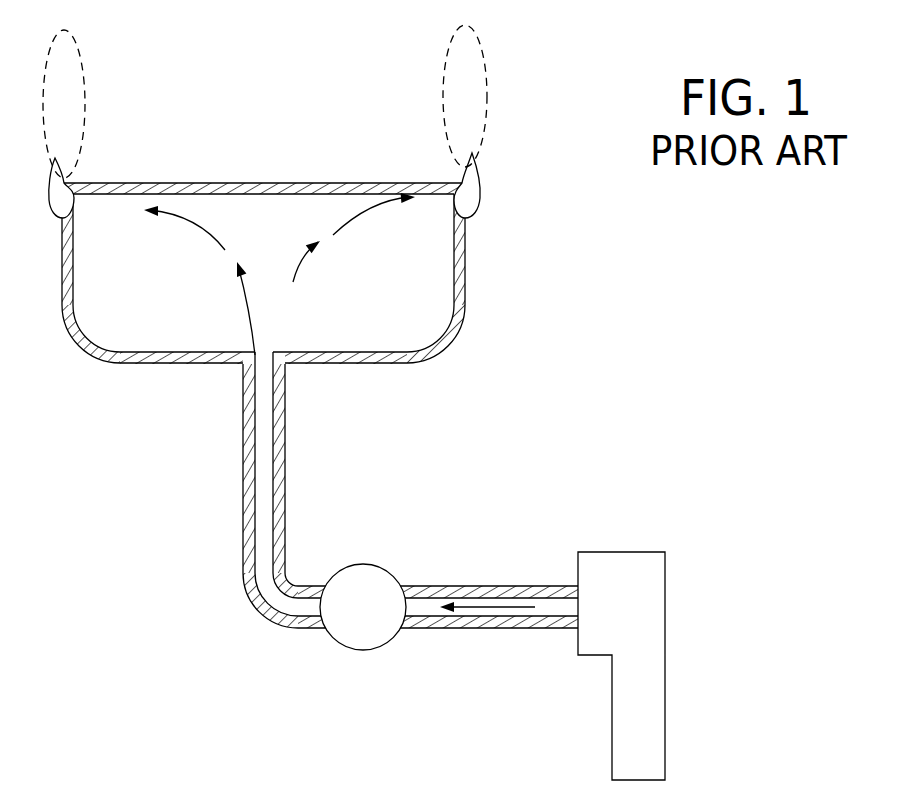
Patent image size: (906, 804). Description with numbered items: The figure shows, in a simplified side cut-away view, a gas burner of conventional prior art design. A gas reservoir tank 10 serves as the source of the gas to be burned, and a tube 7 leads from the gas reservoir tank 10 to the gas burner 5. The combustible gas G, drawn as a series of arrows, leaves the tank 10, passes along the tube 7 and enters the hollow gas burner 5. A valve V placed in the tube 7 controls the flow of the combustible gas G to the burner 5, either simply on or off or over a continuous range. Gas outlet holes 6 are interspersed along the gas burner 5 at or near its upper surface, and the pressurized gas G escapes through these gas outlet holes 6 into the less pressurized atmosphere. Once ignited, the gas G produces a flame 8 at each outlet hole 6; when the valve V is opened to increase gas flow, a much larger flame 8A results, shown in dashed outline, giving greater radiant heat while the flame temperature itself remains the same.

The gas burner 5 is at (465, 297).
The gas outlet holes 6 is at (467, 217).
The tube 7 is at (482, 618).
The flame 8 is at (478, 195).
The larger flame 8A is at (480, 53).
The gas reservoir tank 10 is at (663, 567).
The combustible gas G is at (170, 213).
The valve V is at (363, 607).